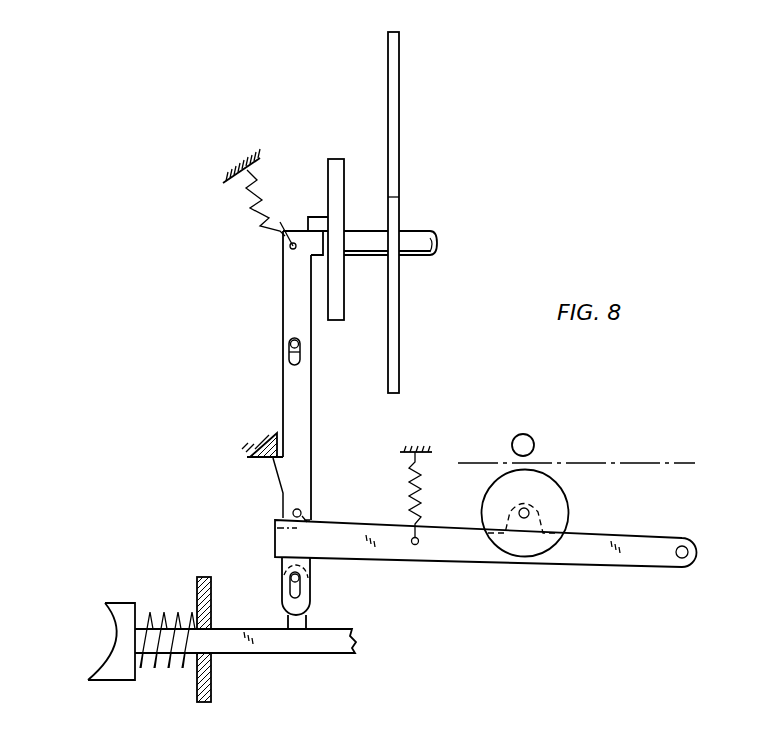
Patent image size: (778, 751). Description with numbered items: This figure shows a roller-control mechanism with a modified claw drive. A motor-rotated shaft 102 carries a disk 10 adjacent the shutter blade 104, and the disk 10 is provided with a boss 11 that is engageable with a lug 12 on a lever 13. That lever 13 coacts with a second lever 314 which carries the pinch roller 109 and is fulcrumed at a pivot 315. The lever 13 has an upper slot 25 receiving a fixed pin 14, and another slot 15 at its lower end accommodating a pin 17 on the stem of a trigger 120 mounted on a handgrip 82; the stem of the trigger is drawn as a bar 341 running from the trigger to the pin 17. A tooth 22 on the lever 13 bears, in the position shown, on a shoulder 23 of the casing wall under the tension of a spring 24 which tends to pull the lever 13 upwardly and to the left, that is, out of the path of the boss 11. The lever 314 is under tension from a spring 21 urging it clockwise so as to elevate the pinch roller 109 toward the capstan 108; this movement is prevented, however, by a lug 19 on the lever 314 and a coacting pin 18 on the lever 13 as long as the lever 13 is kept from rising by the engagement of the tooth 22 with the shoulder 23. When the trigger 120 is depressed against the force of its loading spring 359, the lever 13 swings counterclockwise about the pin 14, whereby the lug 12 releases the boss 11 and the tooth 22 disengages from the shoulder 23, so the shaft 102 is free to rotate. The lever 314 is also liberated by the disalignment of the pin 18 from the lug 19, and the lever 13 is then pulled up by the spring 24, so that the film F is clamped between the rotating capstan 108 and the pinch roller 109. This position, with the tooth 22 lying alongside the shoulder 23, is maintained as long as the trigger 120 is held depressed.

The disk 10 is at (338, 159).
The boss 11 is at (313, 217).
The lug 12 is at (313, 251).
The lever 13 is at (293, 383).
The fixed pin 14 is at (289, 340).
The slot 15 is at (303, 583).
The pin 17 is at (287, 573).
The pin 18 is at (300, 510).
The lug 19 is at (308, 519).
The spring 21 is at (408, 478).
The tooth 22 is at (270, 477).
The shoulder 23 is at (253, 437).
The spring 24 is at (257, 207).
The upper slot 25 is at (300, 357).
The handgrip 82 is at (213, 678).
The shaft 102 is at (420, 237).
The shutter blade 104 is at (390, 55).
The capstan 108 is at (529, 437).
The pinch roller 109 is at (525, 550).
The trigger 120 is at (122, 630).
The lever 314 is at (463, 550).
The fulcrum 315 is at (688, 549).
The bar 341 is at (307, 647).
The loading spring 359 is at (167, 663).
The film F is at (605, 462).